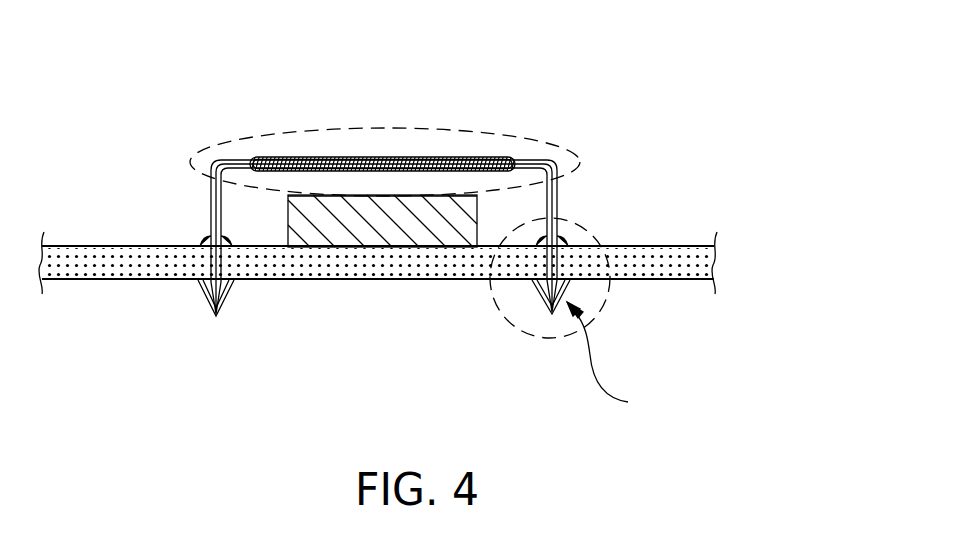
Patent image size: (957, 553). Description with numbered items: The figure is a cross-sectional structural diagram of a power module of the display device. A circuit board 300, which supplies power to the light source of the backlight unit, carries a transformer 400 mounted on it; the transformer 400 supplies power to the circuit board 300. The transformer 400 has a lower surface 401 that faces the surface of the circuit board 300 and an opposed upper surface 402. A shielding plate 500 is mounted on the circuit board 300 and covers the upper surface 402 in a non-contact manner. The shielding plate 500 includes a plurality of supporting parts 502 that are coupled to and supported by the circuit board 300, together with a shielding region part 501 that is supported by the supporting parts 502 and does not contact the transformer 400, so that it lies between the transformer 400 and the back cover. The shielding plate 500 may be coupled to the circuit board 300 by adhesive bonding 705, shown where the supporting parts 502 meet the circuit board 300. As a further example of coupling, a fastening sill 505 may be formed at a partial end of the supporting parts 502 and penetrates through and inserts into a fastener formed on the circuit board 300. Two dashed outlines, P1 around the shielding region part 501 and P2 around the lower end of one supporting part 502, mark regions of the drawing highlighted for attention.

The circuit board 300 is at (141, 265).
The transformer 400 is at (380, 230).
The lower surface 401 is at (447, 246).
The upper surface 402 is at (322, 196).
The shielding plate 500 is at (490, 190).
The shielding region part 501 is at (520, 142).
The supporting parts 502 is at (556, 210).
The fastening sill 505 is at (622, 363).
The adhesive bonding 705 is at (206, 243).
The region P1 is at (383, 128).
The region P2 is at (537, 337).